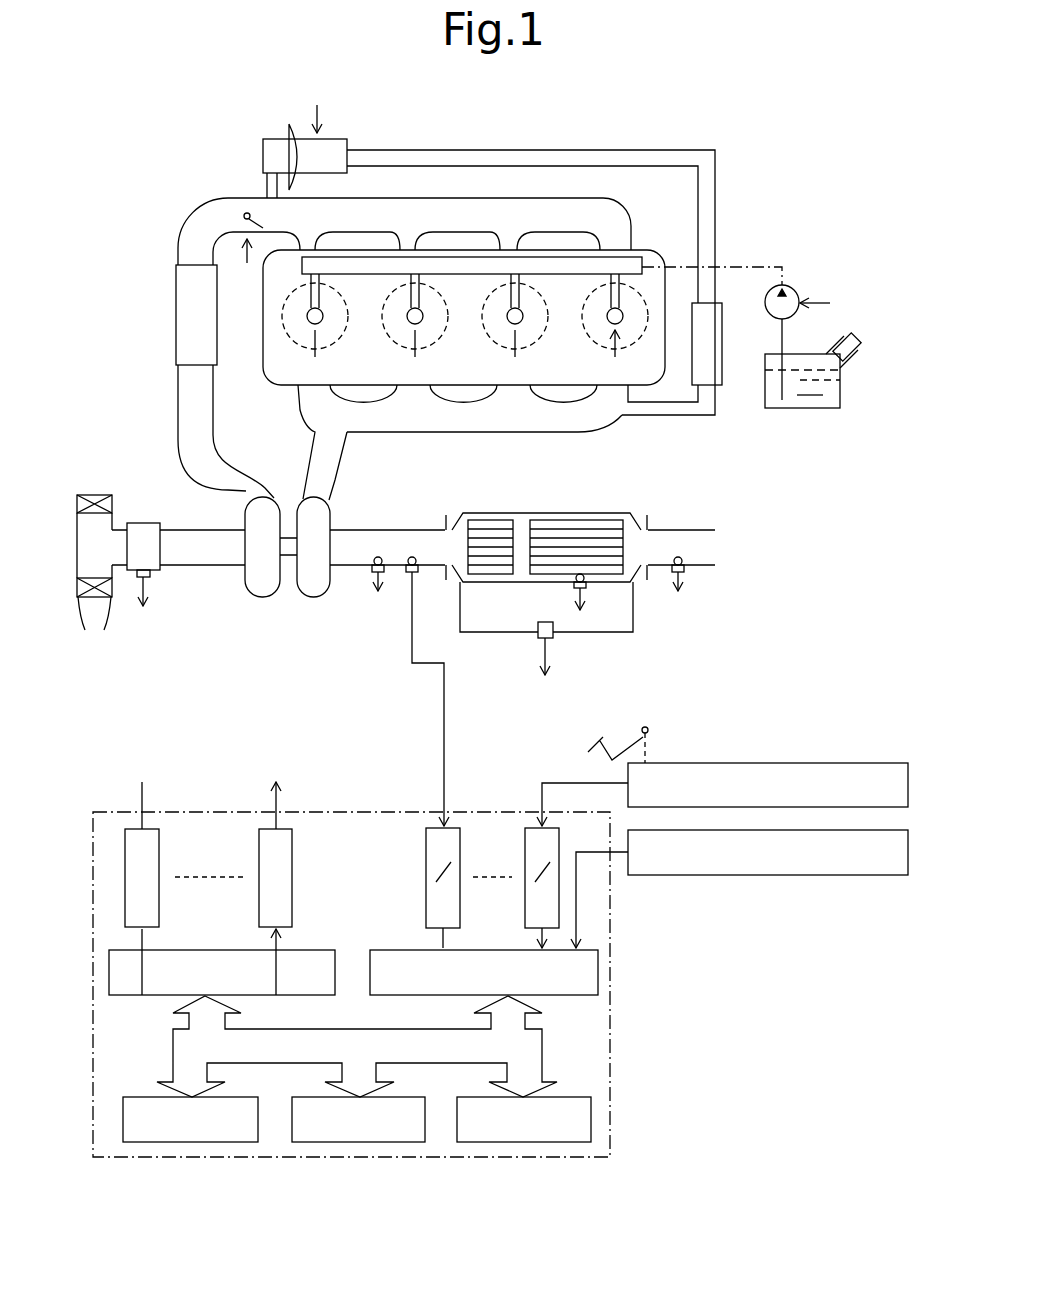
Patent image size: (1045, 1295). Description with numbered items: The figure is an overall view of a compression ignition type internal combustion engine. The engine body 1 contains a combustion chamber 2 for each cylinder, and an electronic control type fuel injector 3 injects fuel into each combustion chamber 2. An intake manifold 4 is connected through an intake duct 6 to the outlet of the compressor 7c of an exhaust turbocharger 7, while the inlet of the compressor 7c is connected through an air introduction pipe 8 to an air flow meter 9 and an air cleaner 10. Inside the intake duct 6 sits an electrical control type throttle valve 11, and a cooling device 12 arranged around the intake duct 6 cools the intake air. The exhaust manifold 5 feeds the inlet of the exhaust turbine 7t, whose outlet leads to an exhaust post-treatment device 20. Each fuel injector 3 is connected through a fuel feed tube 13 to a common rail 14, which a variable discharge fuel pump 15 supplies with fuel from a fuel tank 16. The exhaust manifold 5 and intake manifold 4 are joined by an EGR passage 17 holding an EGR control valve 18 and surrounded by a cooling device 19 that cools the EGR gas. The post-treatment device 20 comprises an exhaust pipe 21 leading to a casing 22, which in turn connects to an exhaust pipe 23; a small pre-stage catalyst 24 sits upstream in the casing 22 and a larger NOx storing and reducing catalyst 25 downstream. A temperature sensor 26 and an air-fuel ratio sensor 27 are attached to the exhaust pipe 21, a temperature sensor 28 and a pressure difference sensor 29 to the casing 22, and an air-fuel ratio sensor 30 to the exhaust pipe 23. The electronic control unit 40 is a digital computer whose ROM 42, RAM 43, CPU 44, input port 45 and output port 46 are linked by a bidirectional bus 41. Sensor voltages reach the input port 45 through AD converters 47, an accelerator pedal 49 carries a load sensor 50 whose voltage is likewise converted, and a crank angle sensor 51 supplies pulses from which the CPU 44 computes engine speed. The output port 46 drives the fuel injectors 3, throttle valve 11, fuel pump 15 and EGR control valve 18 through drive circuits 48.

The engine body 1 is at (641, 232).
The combustion chamber 2 is at (283, 323).
The fuel injector 3 is at (624, 323).
The intake manifold 4 is at (468, 199).
The exhaust manifold 5 is at (416, 434).
The intake duct 6 is at (185, 228).
The exhaust turbocharger 7 is at (266, 587).
The compressor 7c is at (258, 598).
The exhaust turbine 7t is at (314, 598).
The air introduction pipe 8 is at (178, 564).
The air flow meter 9 is at (145, 523).
The air cleaner 10 is at (94, 495).
The throttle valve 11 is at (245, 213).
The cooling device 12 is at (176, 310).
The fuel feed tube 13 is at (617, 302).
The common rail 14 is at (615, 257).
The fuel pump 15 is at (805, 277).
The fuel tank 16 is at (822, 410).
The EGR passage 17 is at (470, 148).
The EGR control valve 18 is at (333, 140).
The cooling device 19 is at (722, 360).
The exhaust post-treatment device 20 is at (618, 553).
The exhaust pipe 21 is at (372, 530).
The casing 22 is at (548, 513).
The exhaust pipe 23 is at (666, 530).
The pre-stage catalyst 24 is at (493, 527).
The NOx storing and reducing catalyst 25 is at (597, 527).
The temperature sensor 26 is at (372, 574).
The air-fuel ratio sensor 27 is at (416, 574).
The temperature sensor 28 is at (586, 588).
The pressure difference sensor 29 is at (555, 640).
The air-fuel ratio sensor 30 is at (687, 574).
The electronic control unit 40 is at (338, 811).
The bidirectional bus 41 is at (543, 1052).
The ROM 42 is at (229, 1142).
The RAM 43 is at (400, 1142).
The CPU 44 is at (557, 1142).
The input port 45 is at (389, 950).
The output port 46 is at (316, 950).
The AD converter 47 is at (524, 848).
The drive circuit 48 is at (257, 848).
The accelerator pedal 49 is at (628, 742).
The load sensor 50 is at (818, 762).
The crank angle sensor 51 is at (827, 877).